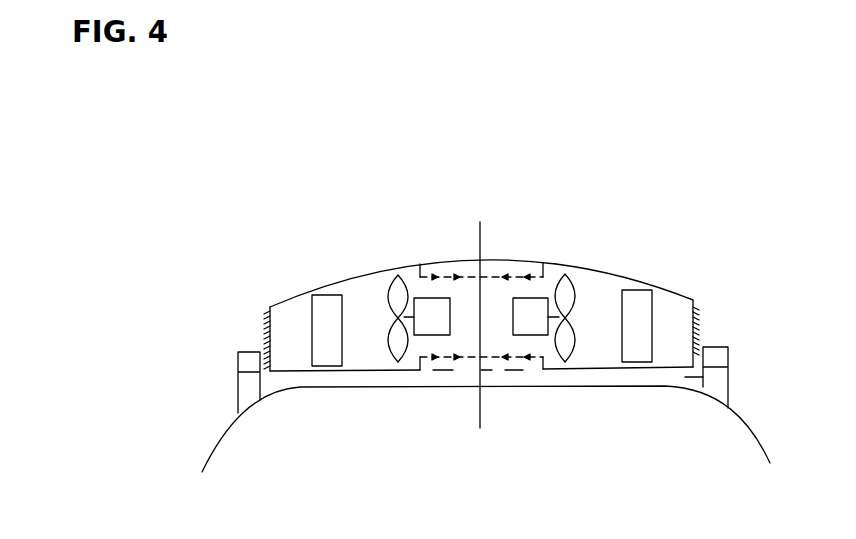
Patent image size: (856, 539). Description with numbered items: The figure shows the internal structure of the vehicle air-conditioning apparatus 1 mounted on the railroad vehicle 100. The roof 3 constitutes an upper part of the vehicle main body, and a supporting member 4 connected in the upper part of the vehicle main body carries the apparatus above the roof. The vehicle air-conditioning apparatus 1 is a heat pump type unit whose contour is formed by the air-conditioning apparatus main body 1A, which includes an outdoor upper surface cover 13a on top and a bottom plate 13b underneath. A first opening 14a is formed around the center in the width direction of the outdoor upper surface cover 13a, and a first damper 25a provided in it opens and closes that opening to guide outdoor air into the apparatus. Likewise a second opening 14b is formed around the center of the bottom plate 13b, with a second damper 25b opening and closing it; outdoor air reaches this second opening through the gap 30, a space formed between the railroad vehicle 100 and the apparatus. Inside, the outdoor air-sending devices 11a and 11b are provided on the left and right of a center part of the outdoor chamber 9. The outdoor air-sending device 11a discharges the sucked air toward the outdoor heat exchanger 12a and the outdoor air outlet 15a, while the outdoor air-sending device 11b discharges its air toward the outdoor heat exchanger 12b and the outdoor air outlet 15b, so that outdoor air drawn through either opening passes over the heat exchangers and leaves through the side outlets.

The railroad vehicle 100 is at (499, 315).
The vehicle air-conditioning apparatus 1 is at (482, 325).
The air-conditioning apparatus main body 1A is at (693, 299).
The roof 3 is at (277, 395).
The supporting member 4 is at (729, 375).
The outdoor chamber 9 is at (390, 268).
The outdoor air-sending device 11a is at (408, 358).
The outdoor air-sending device 11b is at (573, 352).
The outdoor heat exchanger 12a is at (312, 322).
The outdoor heat exchanger 12b is at (652, 318).
The outdoor upper surface cover 13a is at (603, 275).
The bottom plate 13b is at (641, 368).
The first opening 14a is at (512, 265).
The second opening 14b is at (513, 362).
The outdoor air outlet 15a is at (270, 341).
The outdoor air outlet 15b is at (697, 338).
The first damper 25a is at (467, 278).
The second damper 25b is at (455, 357).
The gap 30 is at (703, 377).